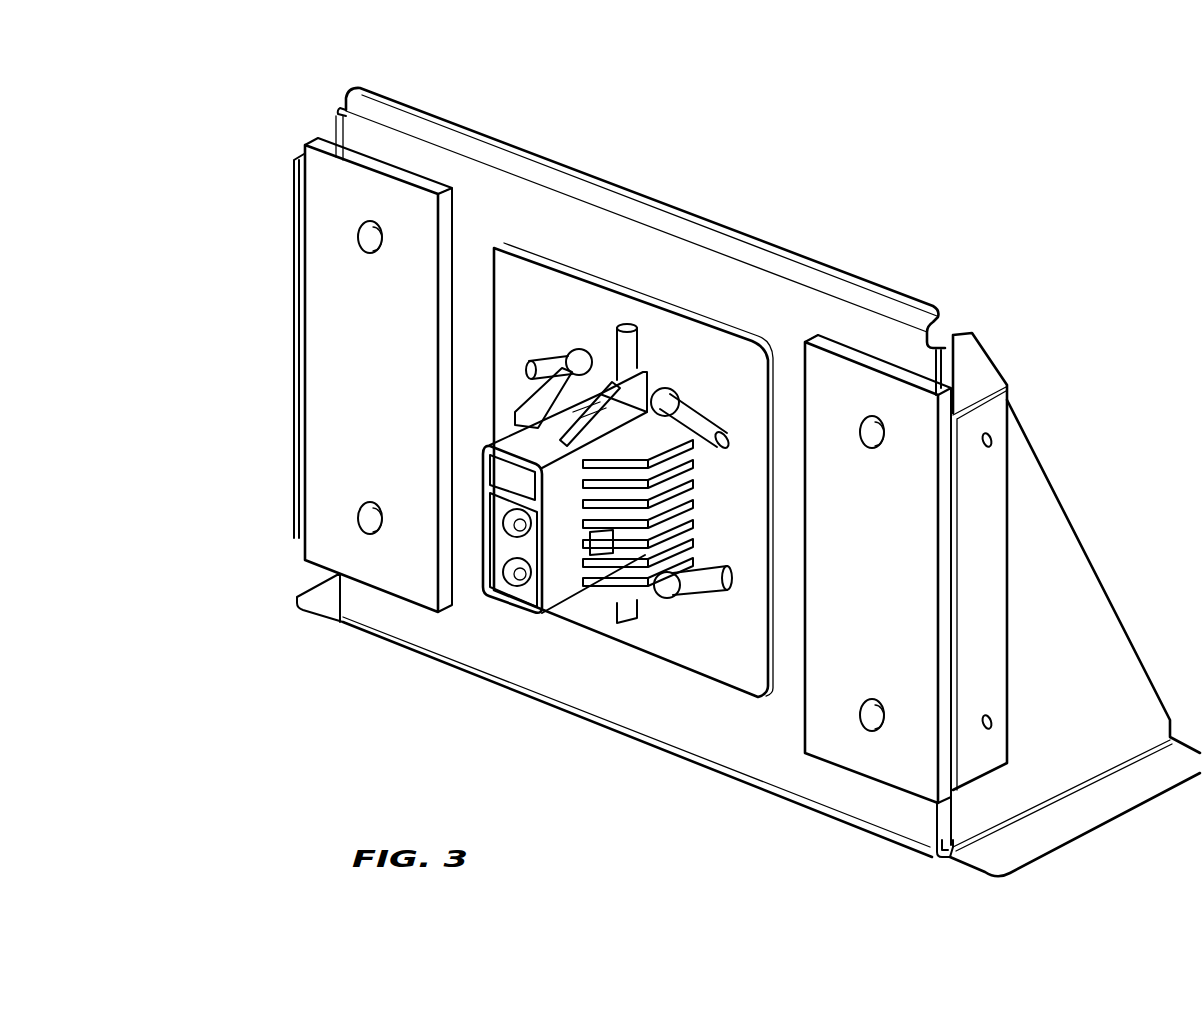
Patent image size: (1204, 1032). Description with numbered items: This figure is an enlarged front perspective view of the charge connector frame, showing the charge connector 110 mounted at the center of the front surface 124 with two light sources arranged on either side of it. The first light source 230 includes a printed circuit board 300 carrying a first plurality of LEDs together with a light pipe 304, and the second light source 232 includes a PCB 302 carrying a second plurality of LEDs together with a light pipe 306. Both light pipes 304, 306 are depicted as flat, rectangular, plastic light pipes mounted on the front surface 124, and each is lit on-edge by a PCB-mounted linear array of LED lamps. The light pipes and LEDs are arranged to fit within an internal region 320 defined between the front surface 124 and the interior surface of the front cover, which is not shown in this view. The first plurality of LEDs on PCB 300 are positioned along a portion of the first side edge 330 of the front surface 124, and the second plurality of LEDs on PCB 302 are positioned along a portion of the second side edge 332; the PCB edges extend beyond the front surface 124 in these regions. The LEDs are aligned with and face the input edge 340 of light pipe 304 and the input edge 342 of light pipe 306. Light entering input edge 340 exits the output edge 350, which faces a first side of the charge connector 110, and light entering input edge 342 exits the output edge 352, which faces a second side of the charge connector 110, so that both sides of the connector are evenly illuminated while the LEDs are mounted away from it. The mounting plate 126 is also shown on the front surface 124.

The charge connector 110 is at (512, 608).
The front surface 124 is at (680, 273).
The mounting plate 126 is at (705, 650).
The first light source 230 is at (306, 572).
The second light source 232 is at (884, 789).
The printed circuit board 300 is at (295, 358).
The PCB 302 is at (980, 527).
The light pipe 304 is at (325, 192).
The light pipe 306 is at (872, 395).
The internal region 320 is at (397, 170).
The first side edge 330 is at (340, 116).
The second side edge 332 is at (940, 350).
The first side edge (input) of light pipe 340 is at (305, 553).
The first side edge (input) of light pipe 342 is at (953, 797).
The output edge 350 is at (447, 187).
The output edge 352 is at (810, 335).